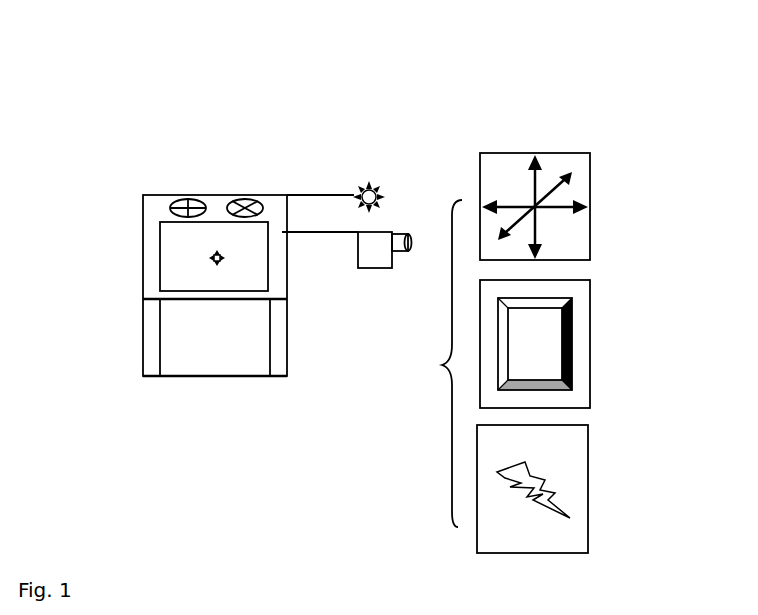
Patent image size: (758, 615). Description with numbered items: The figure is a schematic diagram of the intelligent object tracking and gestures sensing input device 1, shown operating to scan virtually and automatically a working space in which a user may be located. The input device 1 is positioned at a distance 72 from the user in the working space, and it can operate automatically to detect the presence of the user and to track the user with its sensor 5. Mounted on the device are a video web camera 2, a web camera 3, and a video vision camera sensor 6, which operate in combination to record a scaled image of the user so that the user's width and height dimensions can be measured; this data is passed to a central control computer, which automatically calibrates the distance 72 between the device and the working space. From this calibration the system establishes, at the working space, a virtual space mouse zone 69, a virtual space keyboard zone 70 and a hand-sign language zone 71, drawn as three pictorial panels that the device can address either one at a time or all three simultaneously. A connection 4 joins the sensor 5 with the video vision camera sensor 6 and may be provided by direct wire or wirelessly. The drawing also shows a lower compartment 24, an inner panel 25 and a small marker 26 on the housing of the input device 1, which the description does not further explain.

The intelligent object tracking and gestures sensing input device 1 is at (153, 180).
The video web camera 2 is at (190, 180).
The web camera 3 is at (246, 180).
The connection 4 is at (341, 226).
The sensor 5 is at (375, 164).
The video vision camera sensor 6 is at (412, 220).
The lower compartment 24 is at (158, 326).
The door / treatment chamber 25 is at (158, 285).
The sensor marker 26 is at (194, 248).
The virtual space mouse zone 69 is at (603, 184).
The virtual space keyboard zone 70 is at (603, 313).
The hand-sign language zone 71 is at (601, 477).
The distance 72 is at (425, 468).